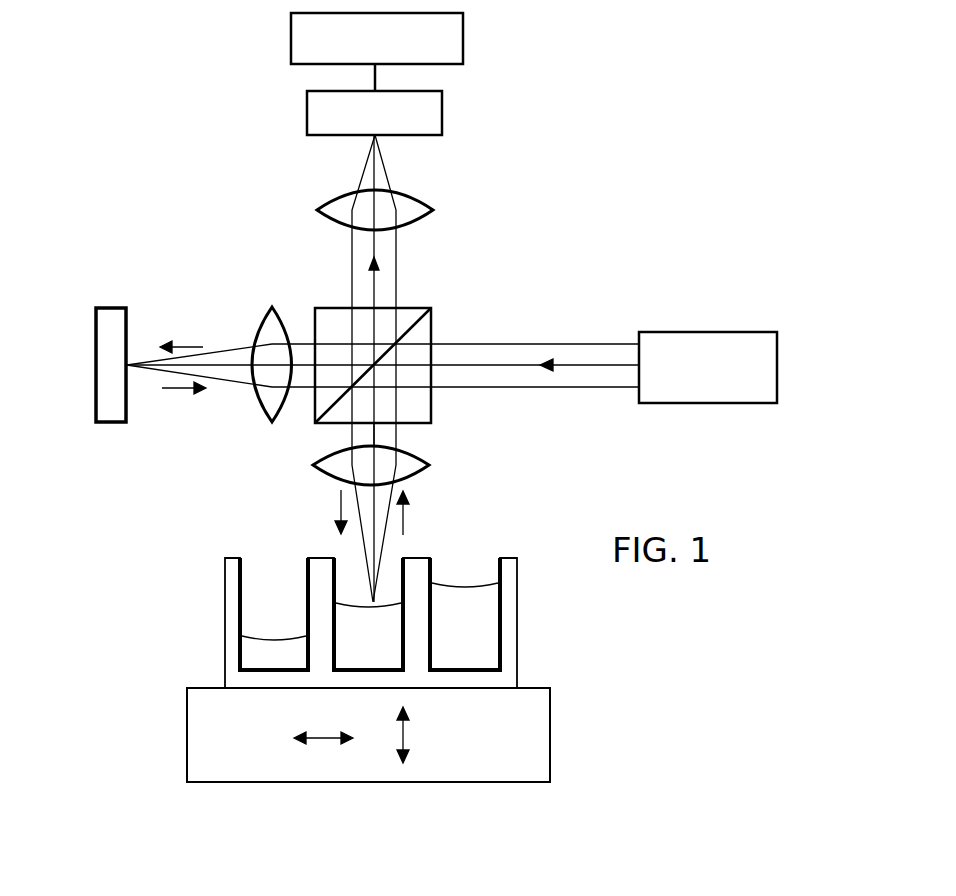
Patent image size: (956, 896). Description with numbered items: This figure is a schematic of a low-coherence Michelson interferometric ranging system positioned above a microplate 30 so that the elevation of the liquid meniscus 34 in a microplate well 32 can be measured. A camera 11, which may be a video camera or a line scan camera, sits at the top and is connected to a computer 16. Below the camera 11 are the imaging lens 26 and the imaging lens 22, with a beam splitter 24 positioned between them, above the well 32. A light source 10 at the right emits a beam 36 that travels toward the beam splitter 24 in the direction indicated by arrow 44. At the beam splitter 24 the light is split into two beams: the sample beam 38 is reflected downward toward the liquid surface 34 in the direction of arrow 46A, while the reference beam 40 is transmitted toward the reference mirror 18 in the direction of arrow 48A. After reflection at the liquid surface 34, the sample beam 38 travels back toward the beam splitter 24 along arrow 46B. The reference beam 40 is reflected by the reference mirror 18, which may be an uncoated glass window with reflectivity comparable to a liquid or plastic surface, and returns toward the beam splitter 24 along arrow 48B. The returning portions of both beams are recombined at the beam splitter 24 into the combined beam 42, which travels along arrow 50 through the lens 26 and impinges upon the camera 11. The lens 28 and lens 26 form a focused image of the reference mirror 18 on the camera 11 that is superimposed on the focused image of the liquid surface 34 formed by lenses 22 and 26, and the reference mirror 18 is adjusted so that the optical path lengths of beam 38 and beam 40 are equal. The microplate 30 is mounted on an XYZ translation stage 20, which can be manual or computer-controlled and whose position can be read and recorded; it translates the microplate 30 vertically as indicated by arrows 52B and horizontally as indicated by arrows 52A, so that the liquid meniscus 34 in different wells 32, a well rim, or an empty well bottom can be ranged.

The light source 10 is at (718, 331).
The camera 11 is at (442, 118).
The computer 16 is at (463, 40).
The mirror 18 is at (106, 307).
The XYZ translation stage 20 is at (187, 720).
The lens 22 is at (313, 465).
The beam splitter 24 is at (431, 311).
The lens 26 is at (317, 210).
The lens 28 is at (272, 308).
The microplate 30 is at (225, 617).
The microplate well 32 is at (405, 639).
The liquid meniscus 34 is at (370, 607).
The beam exiting the light source 36 is at (515, 367).
The sample beam 38 is at (376, 432).
The reference beam 40 is at (302, 368).
The combined beam 42 is at (372, 293).
The arrow indicating direction of propagation of beam 36 44 is at (547, 360).
The arrow indicating direction of propagation of beam 38 towards the sample 46A is at (338, 508).
The arrow indicating direction of propagation of beam 38 after reflection 46B is at (405, 515).
The arrow indicating direction of propagation of beam 40 towards mirror 48A is at (186, 344).
The arrow indicating direction of propagation of beam 40 after reflection 48B is at (175, 391).
The arrow indicating direction of propagation of combined beam 42 50 is at (382, 264).
The arrows indicating horizontal movement of XYZ stage 52A is at (320, 740).
The arrows indicating vertical movement of XYZ stage 52B is at (407, 737).